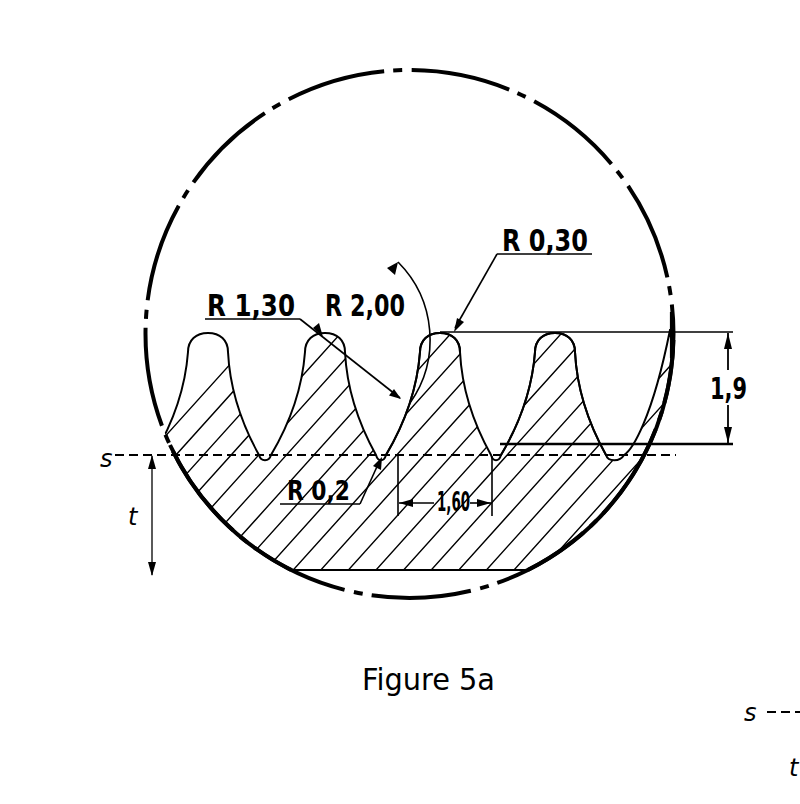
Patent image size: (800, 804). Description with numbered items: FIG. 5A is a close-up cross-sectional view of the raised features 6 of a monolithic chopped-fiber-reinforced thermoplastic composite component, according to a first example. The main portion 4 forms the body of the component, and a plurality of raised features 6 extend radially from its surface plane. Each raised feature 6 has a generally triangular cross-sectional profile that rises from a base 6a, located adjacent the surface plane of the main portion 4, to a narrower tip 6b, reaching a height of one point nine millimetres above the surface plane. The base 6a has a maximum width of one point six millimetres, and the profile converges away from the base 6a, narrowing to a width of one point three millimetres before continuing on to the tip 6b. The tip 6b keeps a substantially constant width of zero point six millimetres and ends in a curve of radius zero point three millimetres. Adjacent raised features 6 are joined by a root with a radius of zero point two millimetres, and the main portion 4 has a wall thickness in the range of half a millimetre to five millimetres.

The main portion 4 is at (407, 547).
The raised feature 6 is at (567, 402).
The base 6a is at (443, 442).
The tip 6b is at (447, 353).